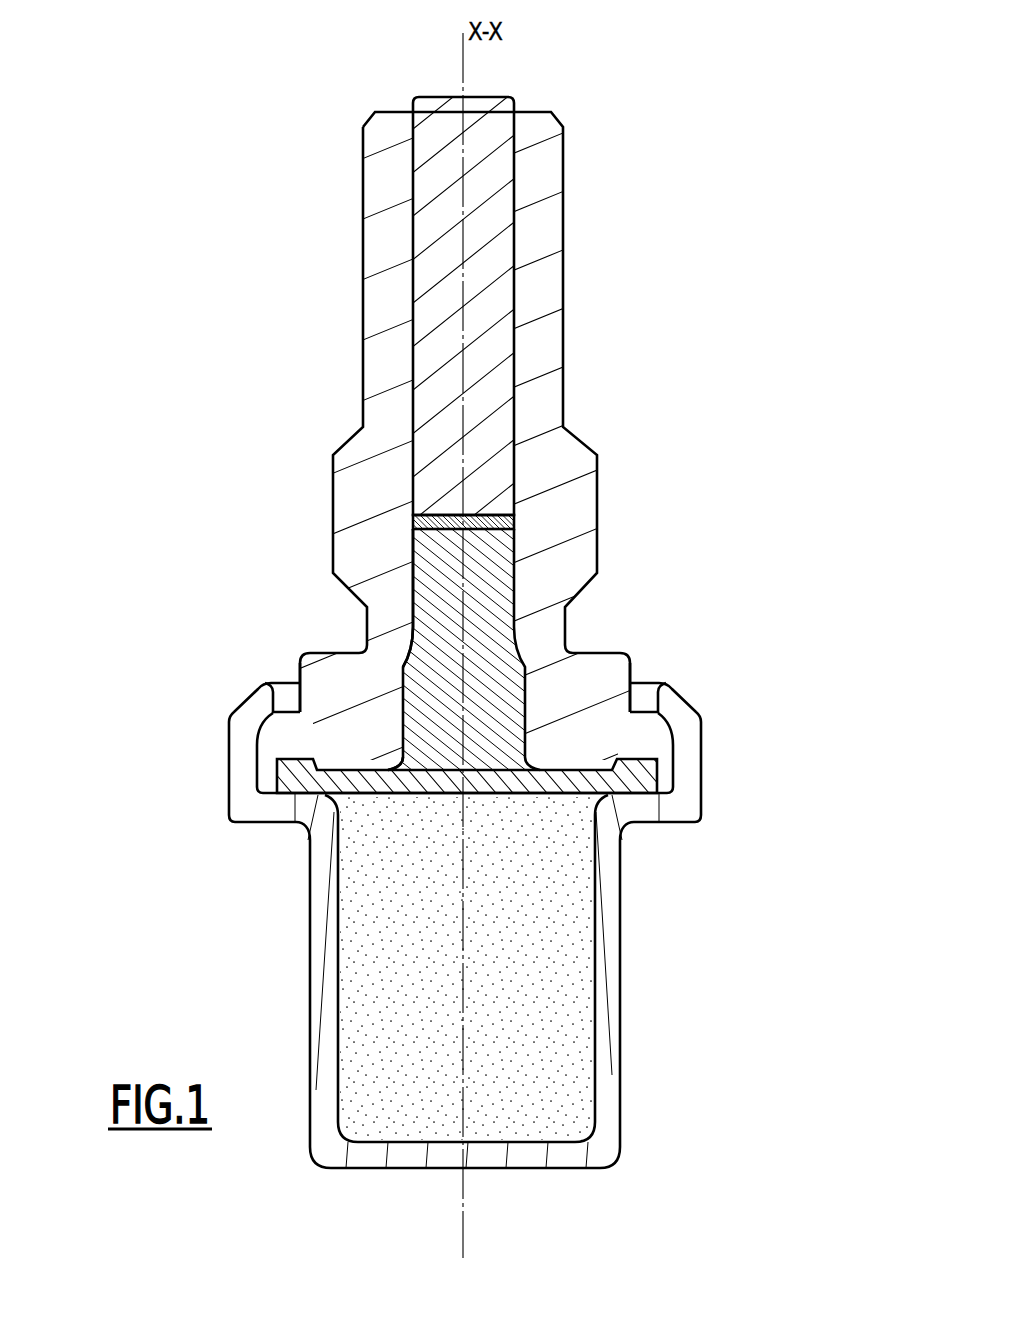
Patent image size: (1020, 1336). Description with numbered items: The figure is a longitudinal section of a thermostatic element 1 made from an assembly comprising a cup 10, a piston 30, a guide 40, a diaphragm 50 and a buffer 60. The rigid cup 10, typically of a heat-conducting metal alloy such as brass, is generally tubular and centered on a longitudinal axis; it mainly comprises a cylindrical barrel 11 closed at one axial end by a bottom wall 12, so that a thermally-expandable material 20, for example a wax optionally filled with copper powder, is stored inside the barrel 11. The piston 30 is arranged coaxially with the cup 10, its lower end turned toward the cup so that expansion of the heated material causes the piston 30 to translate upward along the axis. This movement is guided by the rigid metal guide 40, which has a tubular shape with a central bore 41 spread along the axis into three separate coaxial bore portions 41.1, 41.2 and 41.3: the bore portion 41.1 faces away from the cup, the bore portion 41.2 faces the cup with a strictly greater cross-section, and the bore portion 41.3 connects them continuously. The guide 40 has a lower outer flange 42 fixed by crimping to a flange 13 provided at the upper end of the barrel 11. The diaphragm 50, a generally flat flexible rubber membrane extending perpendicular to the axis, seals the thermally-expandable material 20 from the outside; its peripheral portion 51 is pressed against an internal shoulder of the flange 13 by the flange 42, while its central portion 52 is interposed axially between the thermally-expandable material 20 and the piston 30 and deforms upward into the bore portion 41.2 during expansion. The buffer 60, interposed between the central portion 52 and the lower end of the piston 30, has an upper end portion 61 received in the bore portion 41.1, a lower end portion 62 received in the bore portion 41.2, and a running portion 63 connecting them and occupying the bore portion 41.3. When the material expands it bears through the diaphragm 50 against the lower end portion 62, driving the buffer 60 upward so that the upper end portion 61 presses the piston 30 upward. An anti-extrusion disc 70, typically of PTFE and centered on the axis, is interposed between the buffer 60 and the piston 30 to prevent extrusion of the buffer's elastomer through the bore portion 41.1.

The thermostatic element 1 is at (334, 91).
The cup 10 is at (290, 976).
The barrel 11 is at (605, 1052).
The bottom wall 12 is at (530, 1148).
The flange 13 is at (690, 757).
The thermally-expandable material 20 is at (557, 1045).
The piston 30 is at (400, 233).
The guide 40 is at (350, 303).
The central bore 41 is at (715, 495).
The bore portion 41.1 is at (499, 320).
The bore portion 41.2 is at (513, 710).
The bore portion 41.3 is at (490, 634).
The lower outer flange 42 is at (322, 738).
The diaphragm 50 is at (212, 850).
The peripheral portion 51 is at (320, 838).
The central portion 52 is at (465, 790).
The buffer 60 is at (185, 520).
The upper end portion 61 is at (410, 545).
The lower end portion 62 is at (400, 744).
The running portion 63 is at (452, 647).
The anti-extrusion disc 70 is at (410, 530).